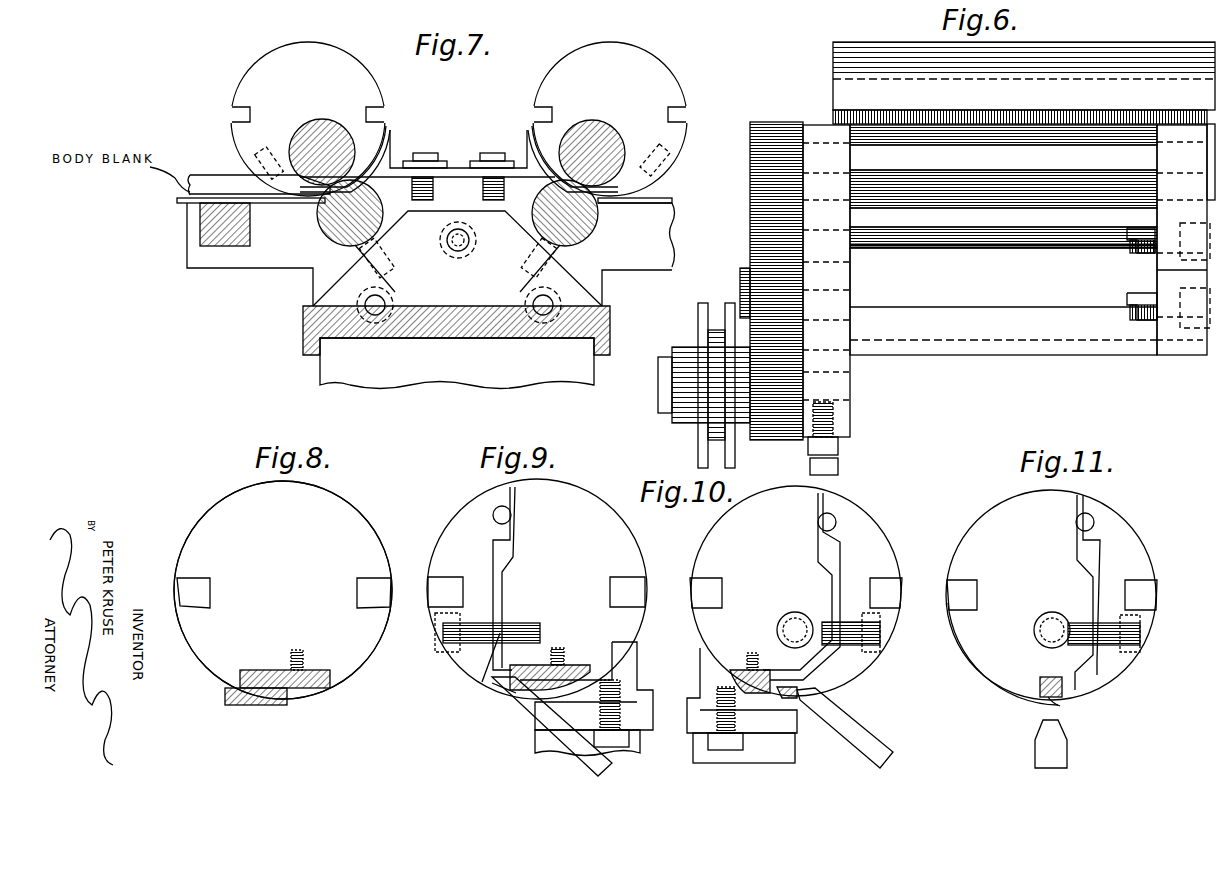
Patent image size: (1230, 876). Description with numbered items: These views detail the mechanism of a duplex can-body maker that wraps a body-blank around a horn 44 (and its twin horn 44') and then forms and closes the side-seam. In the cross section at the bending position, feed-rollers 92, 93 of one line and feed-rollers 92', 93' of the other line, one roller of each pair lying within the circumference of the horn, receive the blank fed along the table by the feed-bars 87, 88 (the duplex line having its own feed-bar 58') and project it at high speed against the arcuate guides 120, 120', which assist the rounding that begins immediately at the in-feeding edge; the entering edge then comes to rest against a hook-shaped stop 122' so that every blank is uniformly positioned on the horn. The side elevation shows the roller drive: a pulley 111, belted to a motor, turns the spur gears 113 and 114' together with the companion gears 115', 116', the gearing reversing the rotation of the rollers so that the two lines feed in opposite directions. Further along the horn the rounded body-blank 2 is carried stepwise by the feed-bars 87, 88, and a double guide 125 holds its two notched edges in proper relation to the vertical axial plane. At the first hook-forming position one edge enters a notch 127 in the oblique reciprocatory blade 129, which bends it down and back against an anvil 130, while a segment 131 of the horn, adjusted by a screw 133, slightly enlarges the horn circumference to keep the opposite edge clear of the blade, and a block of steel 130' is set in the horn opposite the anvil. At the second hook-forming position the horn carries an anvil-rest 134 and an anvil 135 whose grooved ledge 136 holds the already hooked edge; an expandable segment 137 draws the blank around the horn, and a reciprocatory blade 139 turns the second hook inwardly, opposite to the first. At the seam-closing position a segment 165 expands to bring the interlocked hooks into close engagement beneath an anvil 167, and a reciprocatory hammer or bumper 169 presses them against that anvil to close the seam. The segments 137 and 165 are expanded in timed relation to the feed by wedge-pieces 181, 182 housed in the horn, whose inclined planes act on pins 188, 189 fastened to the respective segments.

In FIG. 7, the horn 44 is at (458, 119).
In FIG. 8, the horn 44 is at (291, 590).
In FIG. 9, the horn 44 is at (533, 589).
In FIG. 10, the horn 44 is at (814, 591).
In FIG. 11, the horn 44 is at (1051, 595).
In FIG. 6, the horn 44' is at (1024, 109).
In FIG. 7, the feed-roller 92 is at (600, 146).
In FIG. 7, the feed-roller 92' is at (306, 148).
In FIG. 6, the feed-roller 92' is at (1003, 126).
In FIG. 7, the feed-roller 93 is at (585, 213).
In FIG. 7, the feed-roller 93' is at (337, 216).
In FIG. 6, the feed-roller 93' is at (1003, 251).
In FIG. 7, the arcuate guide 120 is at (499, 155).
In FIG. 7, the arcuate guide 120' is at (430, 162).
In FIG. 7, the guide plate 122' is at (477, 175).
In FIG. 7, the frame 58' is at (227, 254).
In FIG. 6, the bearing block 116' is at (751, 281).
In FIG. 6, the bearing block 115' is at (773, 281).
In FIG. 6, the gear 114' is at (721, 289).
In FIG. 6, the pulley 111 is at (702, 338).
In FIG. 6, the spur gear 113 is at (770, 432).
In FIG. 8, the disc body 2 is at (283, 590).
In FIG. 8, the feed-bar 87 is at (182, 590).
In FIG. 9, the feed-bar 87 is at (435, 598).
In FIG. 10, the feed-bar 87 is at (698, 598).
In FIG. 11, the feed-bar 87 is at (960, 593).
In FIG. 8, the feed-bar 88 is at (385, 588).
In FIG. 9, the feed-bar 88 is at (636, 590).
In FIG. 10, the feed-bar 88 is at (886, 592).
In FIG. 11, the feed-bar 88 is at (1140, 590).
In FIG. 8, the double guide 125 is at (265, 703).
In FIG. 9, the segment 131 is at (485, 578).
In FIG. 9, the block of steel 130' is at (561, 656).
In FIG. 9, the screw 133 is at (475, 643).
In FIG. 9, the notch 127 is at (525, 700).
In FIG. 9, the reciprocatory blade 129 is at (530, 725).
In FIG. 9, the anvil 130 is at (624, 707).
In FIG. 10, the anvil 130 is at (733, 721).
In FIG. 10, the anvil-rest 134 is at (690, 710).
In FIG. 10, the segment 137 is at (848, 522).
In FIG. 10, the pin 188 is at (822, 625).
In FIG. 10, the wedge-piece 181 is at (785, 625).
In FIG. 10, the grooved ledge 136 is at (775, 678).
In FIG. 10, the reciprocatory blade 139 is at (870, 740).
In FIG. 10, the anvil 135 is at (763, 720).
In FIG. 11, the segment 165 is at (1120, 535).
In FIG. 11, the wedge-piece 182 is at (1040, 620).
In FIG. 11, the pin 189 is at (1080, 628).
In FIG. 11, the anvil 167 is at (1042, 680).
In FIG. 11, the bumper 169 is at (1058, 745).